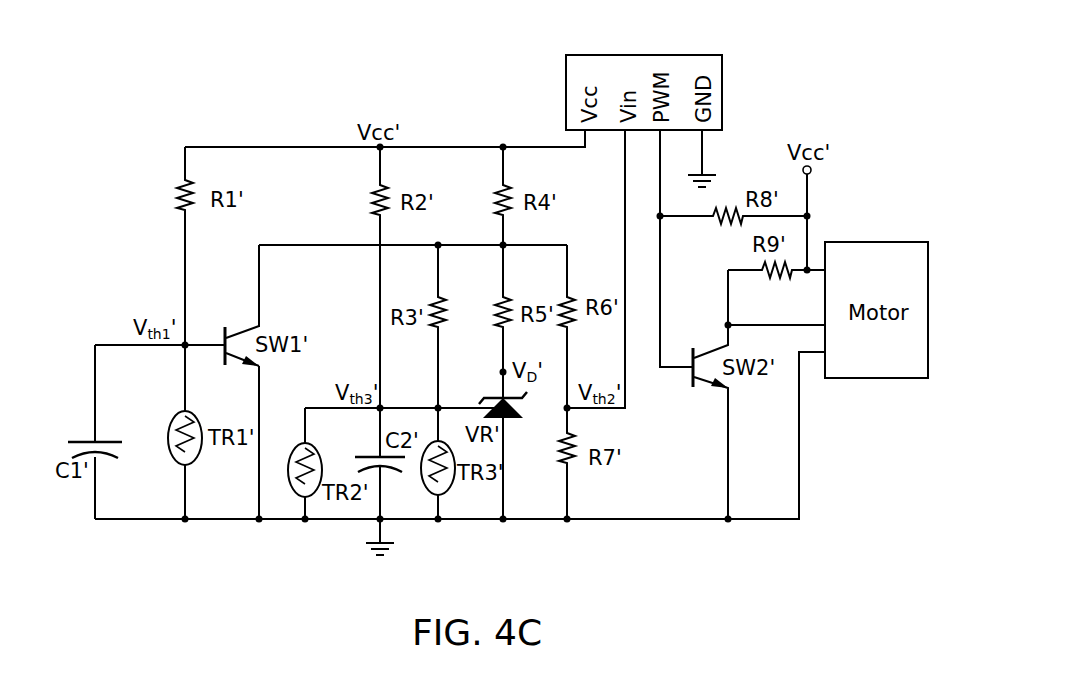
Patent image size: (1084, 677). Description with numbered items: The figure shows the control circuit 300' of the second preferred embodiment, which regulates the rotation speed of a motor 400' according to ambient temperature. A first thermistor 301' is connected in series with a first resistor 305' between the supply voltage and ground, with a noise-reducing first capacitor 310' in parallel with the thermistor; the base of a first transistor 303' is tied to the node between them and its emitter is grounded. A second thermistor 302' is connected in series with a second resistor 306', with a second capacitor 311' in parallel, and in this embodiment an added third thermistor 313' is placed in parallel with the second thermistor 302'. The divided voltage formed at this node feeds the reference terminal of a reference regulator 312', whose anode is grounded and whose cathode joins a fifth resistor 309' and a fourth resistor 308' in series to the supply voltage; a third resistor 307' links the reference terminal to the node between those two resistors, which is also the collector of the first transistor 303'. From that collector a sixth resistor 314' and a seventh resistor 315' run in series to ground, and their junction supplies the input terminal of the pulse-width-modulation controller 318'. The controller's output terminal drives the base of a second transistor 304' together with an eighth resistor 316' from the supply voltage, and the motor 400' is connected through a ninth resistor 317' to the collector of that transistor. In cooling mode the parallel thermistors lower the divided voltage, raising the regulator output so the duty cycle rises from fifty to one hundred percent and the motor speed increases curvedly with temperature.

The control circuit 300' is at (780, 35).
The thermistor TR1' 301' is at (148, 432).
The thermistor TR2' 302' is at (300, 444).
The transistor SW1' 303' is at (224, 322).
The transistor SW2' 304' is at (698, 407).
The resistor R1' 305' is at (145, 246).
The resistor R2' 306' is at (340, 277).
The resistor R3' 307' is at (469, 326).
The resistor R4' 308' is at (468, 196).
The resistor R5' 309' is at (480, 321).
The capacitor C1' 310' is at (122, 471).
The capacitor C2' 311' is at (369, 463).
The reference regulator VR' 312' is at (524, 455).
The thermistor TR3' 313' is at (469, 485).
The resistor R6' 314' is at (596, 326).
The resistor R7' 315' is at (601, 463).
The resistor R8' 316' is at (733, 242).
The resistor R9' 317' is at (781, 291).
The PWM IC 318' is at (655, 65).
The motor 400' is at (885, 287).